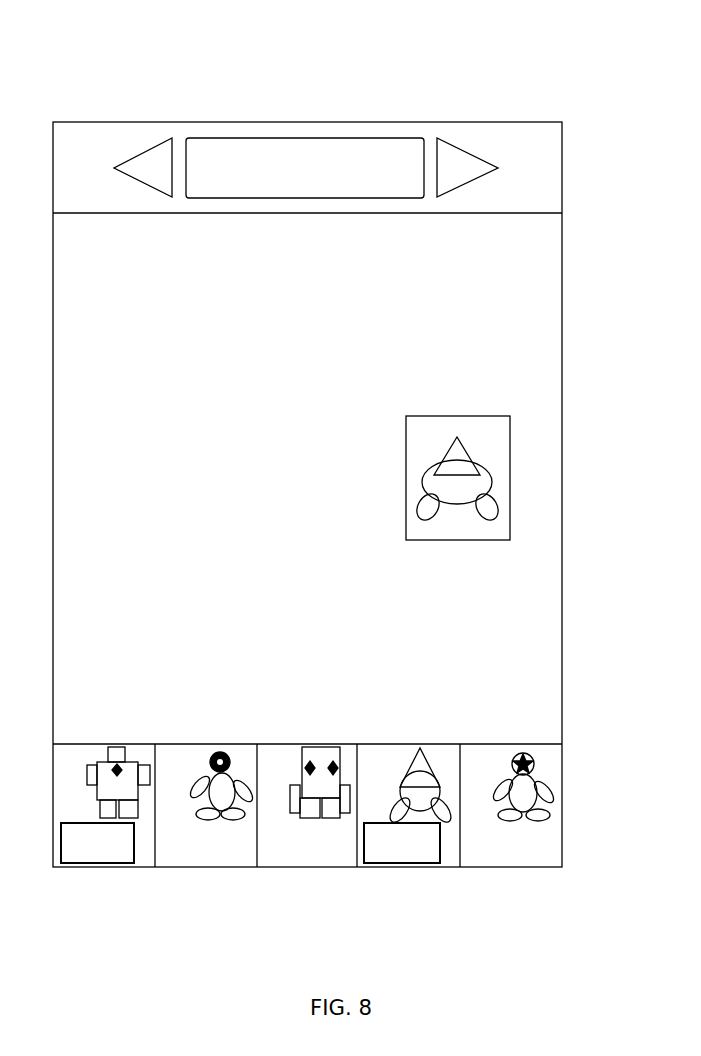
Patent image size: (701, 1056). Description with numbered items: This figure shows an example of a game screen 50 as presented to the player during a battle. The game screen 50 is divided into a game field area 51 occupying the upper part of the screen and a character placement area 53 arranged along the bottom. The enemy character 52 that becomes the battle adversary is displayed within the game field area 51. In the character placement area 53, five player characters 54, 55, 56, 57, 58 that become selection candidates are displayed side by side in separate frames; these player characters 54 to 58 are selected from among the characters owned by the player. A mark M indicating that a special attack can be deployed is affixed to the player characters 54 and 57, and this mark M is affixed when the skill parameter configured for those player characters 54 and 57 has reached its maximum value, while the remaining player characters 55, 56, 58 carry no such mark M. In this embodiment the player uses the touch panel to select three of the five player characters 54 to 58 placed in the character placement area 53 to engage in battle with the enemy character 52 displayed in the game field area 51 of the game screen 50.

The game screen 50 is at (548, 92).
The game field area 51 is at (542, 332).
The enemy character 52 is at (510, 462).
The character placement area 53 is at (562, 760).
The player character 54 is at (122, 867).
The player character 55 is at (217, 867).
The player character 56 is at (317, 867).
The player character 57 is at (425, 863).
The player character 58 is at (525, 863).
The mark M is at (80, 867).